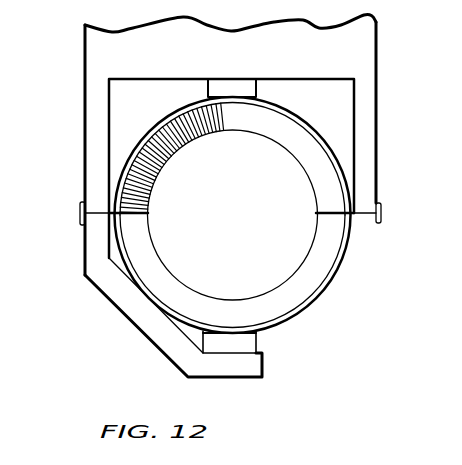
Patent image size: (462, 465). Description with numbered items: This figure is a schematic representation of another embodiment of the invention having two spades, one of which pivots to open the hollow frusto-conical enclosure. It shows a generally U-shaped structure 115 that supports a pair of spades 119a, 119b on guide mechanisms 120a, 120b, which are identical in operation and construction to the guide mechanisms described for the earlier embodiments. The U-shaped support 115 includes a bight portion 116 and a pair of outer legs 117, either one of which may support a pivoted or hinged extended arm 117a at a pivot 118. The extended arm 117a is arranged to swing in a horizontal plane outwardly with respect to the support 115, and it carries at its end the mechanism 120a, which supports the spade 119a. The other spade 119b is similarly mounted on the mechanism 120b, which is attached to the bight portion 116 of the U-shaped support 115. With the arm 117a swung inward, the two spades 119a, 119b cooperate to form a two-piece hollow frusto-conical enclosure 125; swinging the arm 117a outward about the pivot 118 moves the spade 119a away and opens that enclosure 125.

The U-shaped structure 115 is at (379, 98).
The bight portion 116 is at (230, 41).
The outer legs 117 is at (100, 117).
The extended arm 117a is at (127, 305).
The pivot 118 is at (78, 213).
The spade 119a is at (250, 325).
The spade 119b is at (261, 132).
The guide mechanism 120a is at (342, 355).
The guide mechanism 120b is at (240, 90).
The hollow frusto-conical enclosure 125 is at (333, 277).